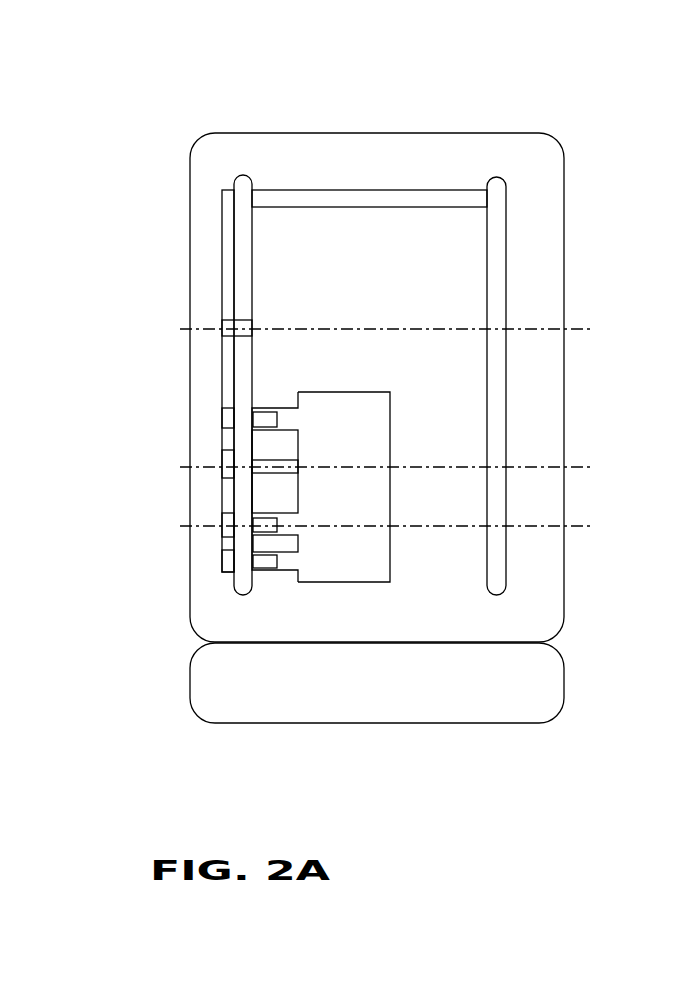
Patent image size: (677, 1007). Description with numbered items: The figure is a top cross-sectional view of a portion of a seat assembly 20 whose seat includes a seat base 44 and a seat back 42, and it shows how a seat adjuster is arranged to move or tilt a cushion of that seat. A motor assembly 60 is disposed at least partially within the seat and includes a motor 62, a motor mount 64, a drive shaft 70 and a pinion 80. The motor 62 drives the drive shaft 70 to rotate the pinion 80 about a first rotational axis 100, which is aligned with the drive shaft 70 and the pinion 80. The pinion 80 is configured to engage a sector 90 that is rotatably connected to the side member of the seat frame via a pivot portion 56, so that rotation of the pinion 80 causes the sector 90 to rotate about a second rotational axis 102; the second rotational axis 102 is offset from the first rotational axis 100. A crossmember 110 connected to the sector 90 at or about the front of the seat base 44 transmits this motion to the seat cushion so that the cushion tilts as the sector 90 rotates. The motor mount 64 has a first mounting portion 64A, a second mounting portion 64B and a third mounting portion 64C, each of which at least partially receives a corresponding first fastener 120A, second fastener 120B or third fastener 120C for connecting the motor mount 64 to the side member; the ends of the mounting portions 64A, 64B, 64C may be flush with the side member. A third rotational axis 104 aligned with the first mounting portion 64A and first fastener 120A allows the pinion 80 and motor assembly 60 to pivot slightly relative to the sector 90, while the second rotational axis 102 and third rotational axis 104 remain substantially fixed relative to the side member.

The seat assembly 20 is at (285, 91).
The seat base 44 is at (493, 133).
The seat back 42 is at (487, 710).
The crossmember 110 is at (352, 190).
The sector 90 is at (228, 253).
The pivot portion 56 is at (223, 325).
The second rotational axis 102 is at (582, 330).
The first rotational axis 100 is at (578, 467).
The third rotational axis 104 is at (580, 527).
The motor assembly 60 is at (263, 478).
The motor 62 is at (391, 452).
The motor mount 64 is at (304, 384).
The first mounting portion 64A is at (285, 515).
The second mounting portion 64B is at (285, 568).
The third mounting portion 64C is at (289, 411).
The drive shaft 70 is at (255, 462).
The pinion 80 is at (225, 472).
The first fastener 120A is at (262, 530).
The second fastener 120B is at (262, 560).
The third fastener 120C is at (267, 417).